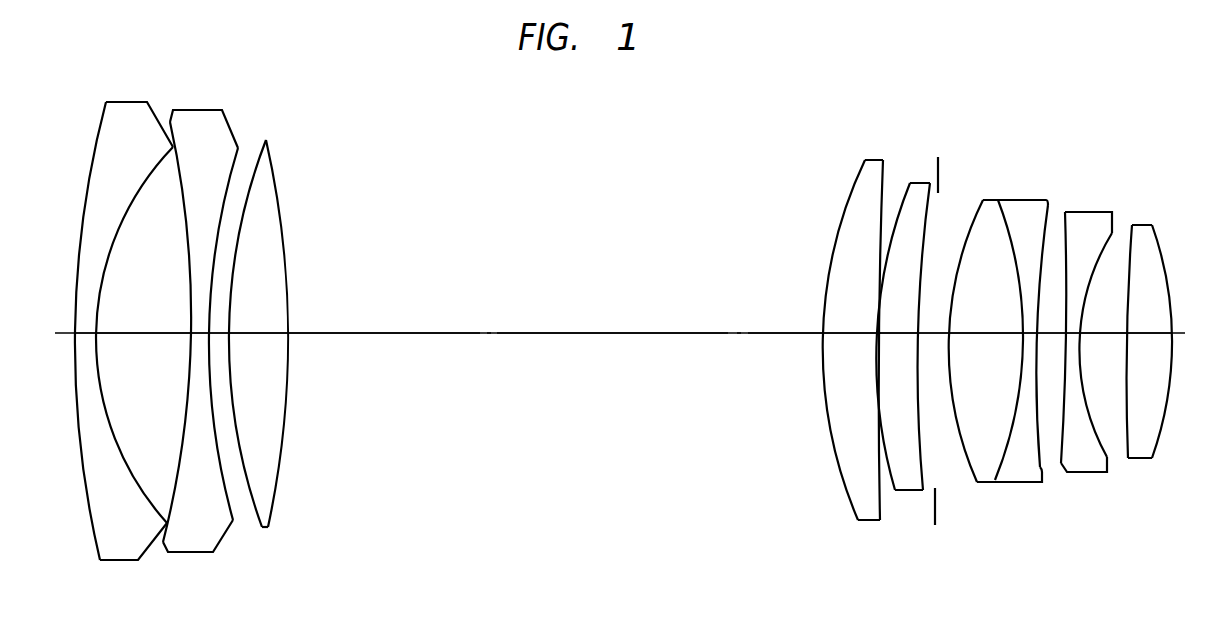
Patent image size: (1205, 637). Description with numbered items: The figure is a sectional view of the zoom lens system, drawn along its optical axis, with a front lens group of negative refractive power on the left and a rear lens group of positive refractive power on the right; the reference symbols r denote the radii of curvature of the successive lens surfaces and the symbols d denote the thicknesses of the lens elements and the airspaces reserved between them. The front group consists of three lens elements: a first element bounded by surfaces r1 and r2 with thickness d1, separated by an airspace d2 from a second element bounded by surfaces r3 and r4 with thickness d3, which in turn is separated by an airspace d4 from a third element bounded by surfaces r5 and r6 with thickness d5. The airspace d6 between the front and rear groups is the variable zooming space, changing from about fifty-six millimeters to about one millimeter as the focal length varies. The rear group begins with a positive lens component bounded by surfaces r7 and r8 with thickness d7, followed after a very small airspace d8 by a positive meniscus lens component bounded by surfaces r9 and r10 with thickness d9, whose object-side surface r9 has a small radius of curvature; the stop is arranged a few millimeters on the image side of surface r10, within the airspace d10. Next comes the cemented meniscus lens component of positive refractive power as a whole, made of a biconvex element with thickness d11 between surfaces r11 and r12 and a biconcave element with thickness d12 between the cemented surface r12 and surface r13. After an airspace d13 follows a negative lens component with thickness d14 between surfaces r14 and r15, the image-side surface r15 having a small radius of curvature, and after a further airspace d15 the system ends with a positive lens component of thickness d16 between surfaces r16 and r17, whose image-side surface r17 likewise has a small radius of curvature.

The radius of curvature of first lens surface r1 is at (93, 543).
The radius of curvature of second lens surface r2 is at (148, 500).
The radius of curvature of third lens surface r3 is at (173, 503).
The radius of curvature of fourth lens surface r4 is at (227, 498).
The radius of curvature of fifth lens surface r5 is at (255, 510).
The radius of curvature of sixth lens surface r6 is at (275, 500).
The radius of curvature of seventh lens surface r7 is at (847, 493).
The radius of curvature of eighth lens surface r8 is at (877, 507).
The radius of curvature of ninth lens surface r9 is at (897, 490).
The radius of curvature of tenth lens surface r10 is at (920, 490).
The radius of curvature of eleventh lens surface r11 is at (968, 467).
The radius of curvature of twelfth lens surface r12 is at (1007, 463).
The radius of curvature of thirteenth lens surface r13 is at (1040, 467).
The radius of curvature of fourteenth lens surface r14 is at (1067, 453).
The radius of curvature of fifteenth lens surface r15 is at (1097, 452).
The radius of curvature of sixteenth lens surface r16 is at (1128, 450).
The radius of curvature of seventeenth lens surface r17 is at (1160, 450).
The thickness of first lens element d1 is at (90, 333).
The airspace between first and second lens elements d2 is at (143, 333).
The thickness of second lens element d3 is at (203, 333).
The airspace between second and third lens elements d4 is at (218, 337).
The thickness of third lens element d5 is at (255, 333).
The airspace between front and rear lens groups d6 is at (560, 333).
The thickness of fourth lens element d7 is at (857, 333).
The airspace between fourth and fifth lens elements d8 is at (877, 342).
The thickness of fifth lens element d9 is at (900, 333).
The airspace between fifth and sixth lens elements d10 is at (935, 333).
The thickness of sixth lens element d11 is at (987, 333).
The thickness of seventh lens element d12 is at (1032, 333).
The airspace between seventh and eighth lens elements d13 is at (1050, 338).
The thickness of eighth lens element d14 is at (1075, 333).
The airspace between eighth and ninth lens elements d15 is at (1105, 333).
The thickness of ninth lens element d16 is at (1148, 333).